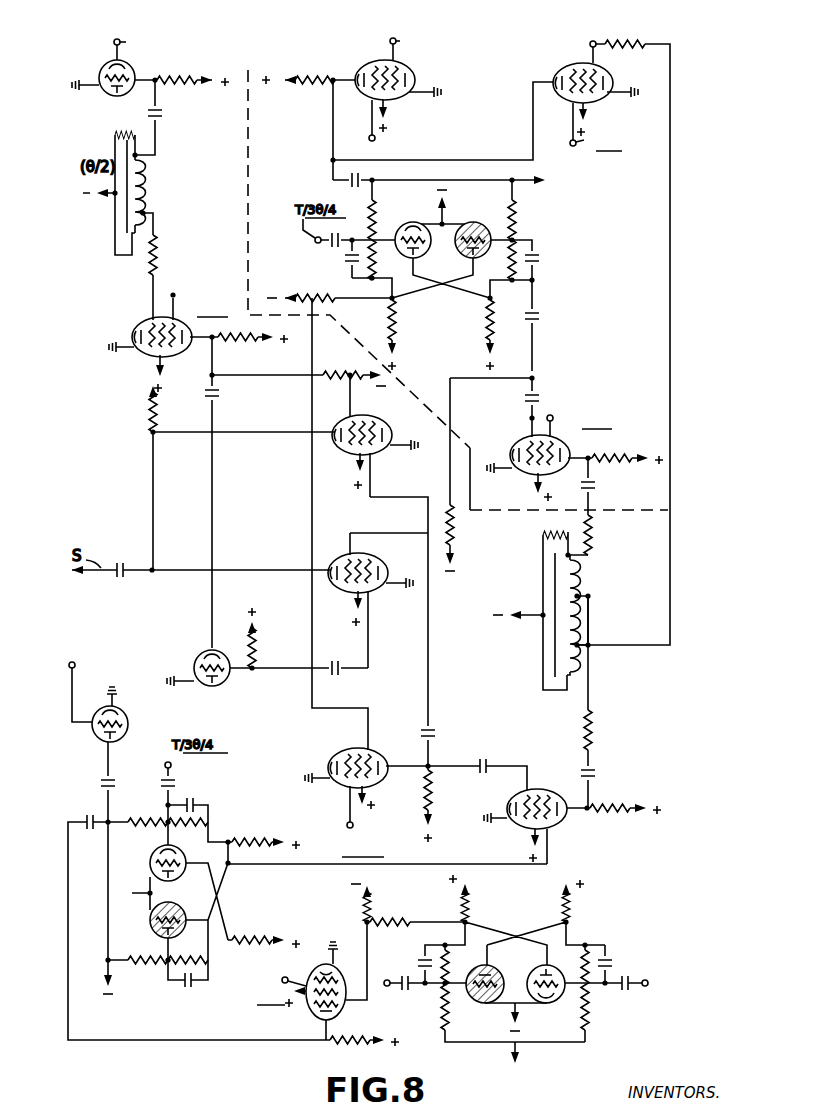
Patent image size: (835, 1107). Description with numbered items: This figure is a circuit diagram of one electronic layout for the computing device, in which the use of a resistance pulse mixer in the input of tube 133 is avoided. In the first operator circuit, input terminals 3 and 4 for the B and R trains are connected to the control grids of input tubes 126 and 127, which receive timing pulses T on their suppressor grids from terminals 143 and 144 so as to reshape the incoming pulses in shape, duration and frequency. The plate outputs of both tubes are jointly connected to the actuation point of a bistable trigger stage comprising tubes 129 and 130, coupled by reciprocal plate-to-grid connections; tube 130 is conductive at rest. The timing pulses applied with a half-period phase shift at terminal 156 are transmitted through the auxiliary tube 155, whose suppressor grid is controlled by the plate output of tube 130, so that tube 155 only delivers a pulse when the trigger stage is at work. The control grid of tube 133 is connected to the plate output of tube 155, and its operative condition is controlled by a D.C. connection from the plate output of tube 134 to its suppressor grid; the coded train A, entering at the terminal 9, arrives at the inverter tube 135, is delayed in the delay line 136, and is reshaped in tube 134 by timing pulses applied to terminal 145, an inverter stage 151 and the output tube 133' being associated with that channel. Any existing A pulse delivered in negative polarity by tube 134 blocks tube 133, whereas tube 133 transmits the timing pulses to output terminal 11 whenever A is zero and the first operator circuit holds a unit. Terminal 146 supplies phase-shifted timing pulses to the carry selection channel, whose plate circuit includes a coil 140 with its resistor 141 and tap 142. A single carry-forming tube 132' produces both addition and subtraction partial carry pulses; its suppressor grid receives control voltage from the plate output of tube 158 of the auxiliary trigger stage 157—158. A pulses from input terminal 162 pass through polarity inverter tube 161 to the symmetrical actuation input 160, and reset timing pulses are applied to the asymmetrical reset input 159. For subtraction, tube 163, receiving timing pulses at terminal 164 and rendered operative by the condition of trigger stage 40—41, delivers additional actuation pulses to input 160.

The input terminal 3 is at (394, 42).
The input terminal 4 is at (594, 50).
The terminal A 9 is at (118, 42).
The output channel 11 is at (127, 577).
The trigger stage tube 40 is at (548, 1004).
The trigger stage tube 41 is at (480, 1004).
The input tube 126 is at (404, 101).
The input tube 127 is at (560, 73).
The trigger stage tube 129 is at (413, 228).
The trigger stage tube 130 is at (473, 228).
The carry-forming tube 132' is at (562, 826).
The output tube 133 is at (370, 456).
The output tube 133' is at (366, 610).
The reshaping tube 134 is at (143, 356).
The inverter tube 135 is at (111, 96).
The delay line 136 is at (130, 203).
The transformer coil 140 is at (545, 578).
The resistor 141 is at (597, 557).
The coil tap 142 is at (590, 612).
The timing pulse terminal 143 is at (384, 146).
The timing pulse terminal 144 is at (590, 151).
The timing pulse terminal 145 is at (176, 294).
The timing pulse terminal 146 is at (553, 415).
The polarity inverter stage 151 is at (227, 694).
The auxiliary tube 155 is at (342, 758).
The timing pulse terminal 156 is at (357, 837).
The auxiliary trigger stage tube 157 is at (156, 857).
The auxiliary trigger stage tube 158 is at (155, 930).
The asymmetrical reset input 159 is at (183, 772).
The symmetrical actuation input 160 is at (108, 821).
The polarity inverter tube 161 is at (128, 729).
The input terminal 162 is at (76, 663).
The tube 163 is at (301, 1012).
The timing pulse terminal 164 is at (281, 978).